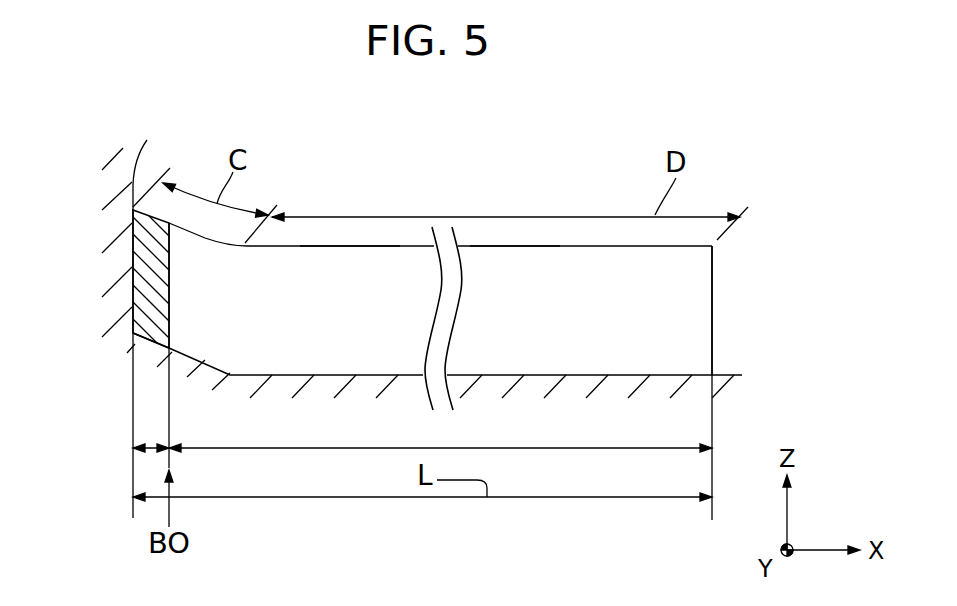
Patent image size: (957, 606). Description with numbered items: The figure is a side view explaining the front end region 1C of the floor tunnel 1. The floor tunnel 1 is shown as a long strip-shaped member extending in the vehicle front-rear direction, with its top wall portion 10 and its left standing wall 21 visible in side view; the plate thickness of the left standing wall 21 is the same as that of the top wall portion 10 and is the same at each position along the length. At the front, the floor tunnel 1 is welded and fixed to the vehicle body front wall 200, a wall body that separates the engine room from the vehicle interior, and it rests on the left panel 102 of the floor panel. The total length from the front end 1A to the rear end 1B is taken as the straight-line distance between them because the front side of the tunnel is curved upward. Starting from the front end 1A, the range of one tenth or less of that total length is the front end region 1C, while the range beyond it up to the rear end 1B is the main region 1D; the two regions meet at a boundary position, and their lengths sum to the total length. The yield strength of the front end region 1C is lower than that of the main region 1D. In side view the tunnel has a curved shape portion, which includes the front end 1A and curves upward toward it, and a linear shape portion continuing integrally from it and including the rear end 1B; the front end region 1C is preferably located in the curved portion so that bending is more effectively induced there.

The floor tunnel 1 is at (560, 201).
The top wall portion 10 is at (348, 246).
The left standing wall 21 is at (506, 278).
The front end 1A is at (133, 277).
The rear end 1B is at (712, 297).
The front end region 1C is at (151, 445).
The main region 1D is at (565, 447).
The left panel 102 is at (676, 374).
The vehicle body front wall 200 is at (135, 170).